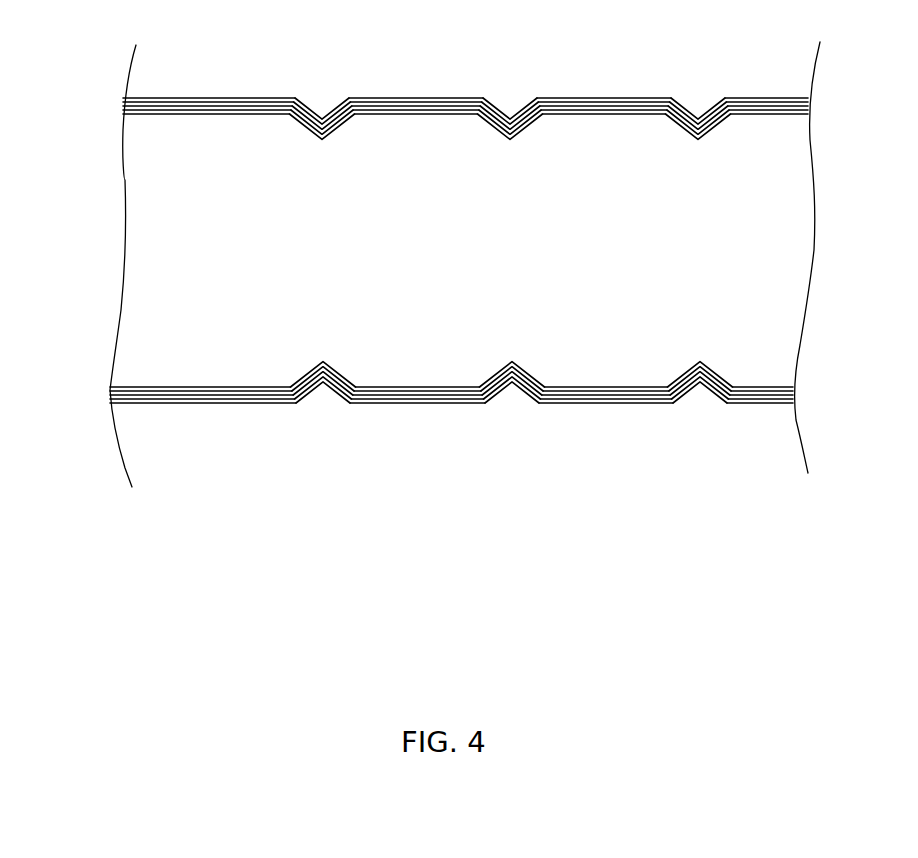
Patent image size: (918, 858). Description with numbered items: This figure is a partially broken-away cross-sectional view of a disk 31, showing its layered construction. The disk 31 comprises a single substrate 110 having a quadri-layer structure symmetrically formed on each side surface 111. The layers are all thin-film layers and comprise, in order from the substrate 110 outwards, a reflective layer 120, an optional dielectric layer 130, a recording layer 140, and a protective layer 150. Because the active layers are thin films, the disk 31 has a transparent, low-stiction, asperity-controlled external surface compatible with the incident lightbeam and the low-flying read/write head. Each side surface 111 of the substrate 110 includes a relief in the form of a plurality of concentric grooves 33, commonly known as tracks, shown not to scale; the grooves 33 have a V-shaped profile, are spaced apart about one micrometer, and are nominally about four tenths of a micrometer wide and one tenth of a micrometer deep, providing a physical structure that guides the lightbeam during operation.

The disk 31 is at (246, 426).
The grooves 33 is at (321, 141).
The substrate 110 is at (138, 238).
The side surface 111 is at (193, 115).
The reflective layer 120 is at (119, 110).
The dielectric layer 130 is at (121, 105).
The recording layer 140 is at (121, 101).
The protective layer 150 is at (122, 97).